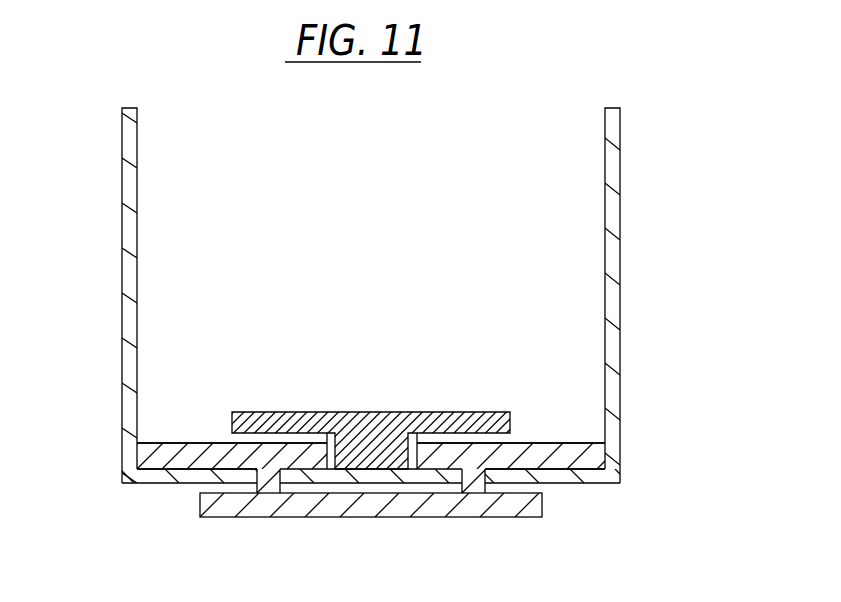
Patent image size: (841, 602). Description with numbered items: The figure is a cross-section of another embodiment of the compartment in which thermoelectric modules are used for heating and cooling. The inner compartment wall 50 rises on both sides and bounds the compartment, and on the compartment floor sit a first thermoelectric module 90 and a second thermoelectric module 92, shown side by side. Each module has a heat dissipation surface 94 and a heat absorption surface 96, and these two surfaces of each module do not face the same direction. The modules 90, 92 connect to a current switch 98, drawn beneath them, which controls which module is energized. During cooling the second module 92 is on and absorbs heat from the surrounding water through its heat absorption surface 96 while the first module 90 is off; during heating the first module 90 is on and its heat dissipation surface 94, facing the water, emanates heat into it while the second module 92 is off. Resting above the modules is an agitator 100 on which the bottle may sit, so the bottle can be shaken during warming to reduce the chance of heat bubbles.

The inner compartment wall 50 is at (620, 167).
The first thermoelectric module 90 is at (157, 462).
The second thermoelectric module 92 is at (595, 455).
The heat dissipation surface 94 is at (177, 443).
The heat absorption surface 96 is at (178, 472).
The current switch 98 is at (470, 517).
The agitator 100 is at (497, 413).